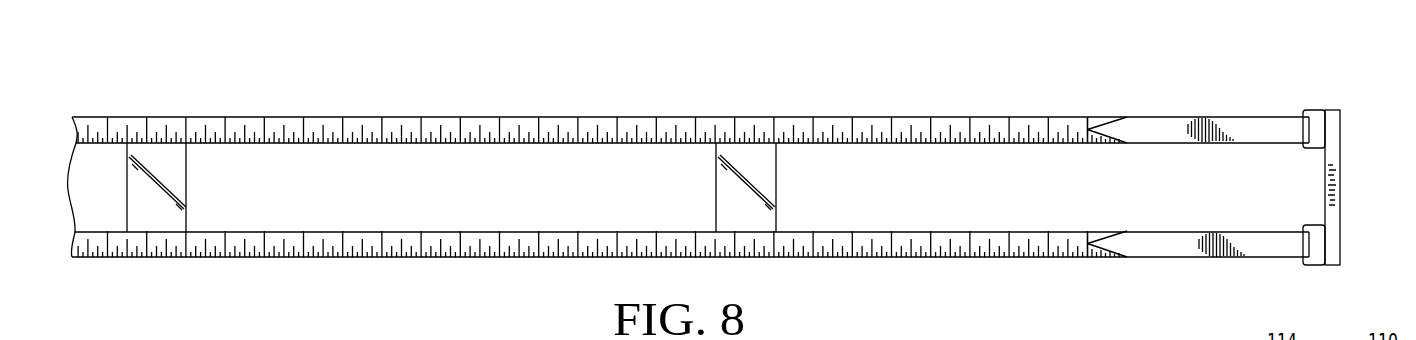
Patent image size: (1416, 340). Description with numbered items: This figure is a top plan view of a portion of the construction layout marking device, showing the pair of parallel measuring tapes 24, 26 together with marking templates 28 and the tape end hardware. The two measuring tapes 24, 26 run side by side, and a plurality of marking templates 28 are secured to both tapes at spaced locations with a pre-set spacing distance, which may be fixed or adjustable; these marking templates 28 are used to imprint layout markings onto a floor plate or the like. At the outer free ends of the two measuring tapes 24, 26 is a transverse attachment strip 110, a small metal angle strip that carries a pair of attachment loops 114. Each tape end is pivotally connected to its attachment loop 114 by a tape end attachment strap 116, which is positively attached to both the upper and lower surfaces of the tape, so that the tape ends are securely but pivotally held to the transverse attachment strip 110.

The measuring tape 24 is at (1047, 113).
The measuring tape 26 is at (935, 261).
The marking template 28 is at (778, 189).
The transverse attachment strip 110 is at (1332, 148).
The attachment loop 114 is at (1312, 110).
The tape end attachment strap 116 is at (1167, 127).